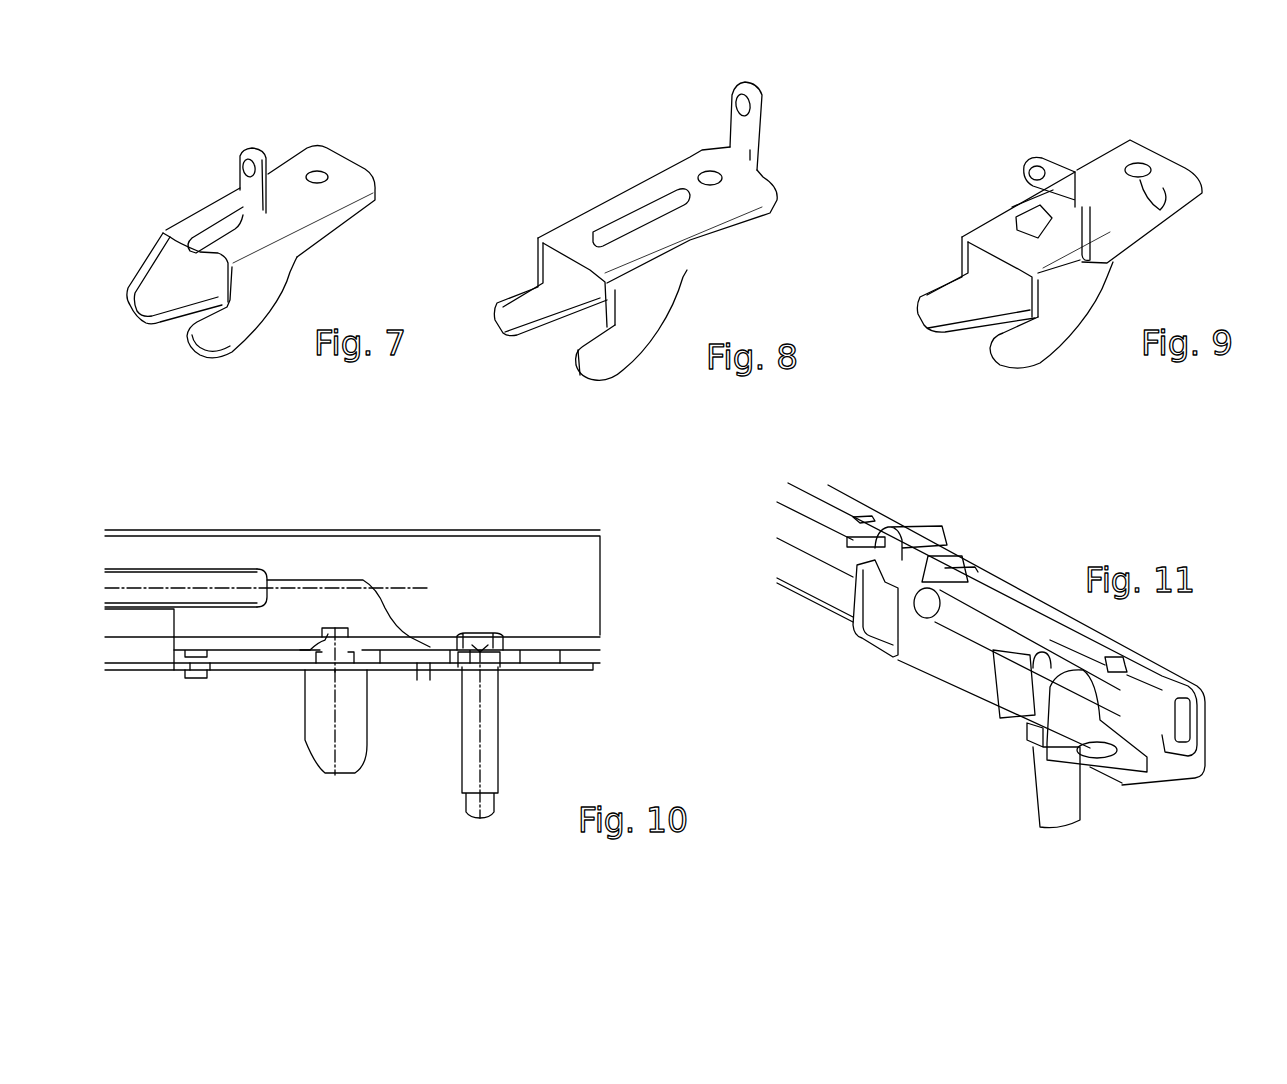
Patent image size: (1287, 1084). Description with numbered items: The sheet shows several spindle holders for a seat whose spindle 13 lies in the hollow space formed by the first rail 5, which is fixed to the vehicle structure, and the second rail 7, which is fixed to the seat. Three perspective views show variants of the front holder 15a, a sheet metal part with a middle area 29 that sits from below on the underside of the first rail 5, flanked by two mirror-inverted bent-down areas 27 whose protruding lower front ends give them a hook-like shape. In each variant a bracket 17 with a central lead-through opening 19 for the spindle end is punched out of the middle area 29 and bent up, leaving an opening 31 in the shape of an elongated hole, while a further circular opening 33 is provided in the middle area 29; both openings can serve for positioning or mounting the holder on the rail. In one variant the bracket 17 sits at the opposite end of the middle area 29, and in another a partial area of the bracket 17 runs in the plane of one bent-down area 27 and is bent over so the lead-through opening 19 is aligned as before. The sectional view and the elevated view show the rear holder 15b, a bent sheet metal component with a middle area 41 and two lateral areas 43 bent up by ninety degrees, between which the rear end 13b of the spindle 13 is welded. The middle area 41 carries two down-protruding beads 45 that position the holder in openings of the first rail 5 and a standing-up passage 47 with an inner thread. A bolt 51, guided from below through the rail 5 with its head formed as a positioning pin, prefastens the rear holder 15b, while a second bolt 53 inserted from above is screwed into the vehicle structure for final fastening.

In FIG. 10, the first rail 5 is at (582, 668).
In FIG. 11, the first rail 5 is at (1188, 780).
In FIG. 11, the second rail 7 is at (1128, 670).
In FIG. 10, the spindle 13 is at (137, 587).
In FIG. 11, the spindle 13 is at (980, 612).
In FIG. 10, the rear end of the spindle 13b is at (257, 577).
In FIG. 11, the rear end of the spindle 13b is at (1033, 653).
In FIG. 7, the front holder 15a is at (353, 180).
In FIG. 8, the front holder 15a is at (723, 235).
In FIG. 9, the front holder 15a is at (1123, 233).
In FIG. 10, the rear holder 15b is at (255, 625).
In FIG. 11, the rear holder 15b is at (1003, 690).
In FIG. 7, the bracket 17 is at (245, 190).
In FIG. 8, the bracket 17 is at (745, 148).
In FIG. 9, the bracket 17 is at (1068, 190).
In FIG. 7, the lead-through opening 19 is at (252, 167).
In FIG. 8, the lead-through opening 19 is at (745, 105).
In FIG. 9, the lead-through opening 19 is at (1037, 170).
In FIG. 7, the bent-down areas 27 is at (235, 332).
In FIG. 8, the bent-down areas 27 is at (631, 325).
In FIG. 9, the bent-down areas 27 is at (1037, 342).
In FIG. 7, the middle area 29 is at (310, 200).
In FIG. 8, the middle area 29 is at (570, 237).
In FIG. 9, the middle area 29 is at (995, 223).
In FIG. 7, the opening 31 is at (208, 242).
In FIG. 8, the opening 31 is at (637, 217).
In FIG. 9, the opening 31 is at (1027, 235).
In FIG. 7, the opening 33 is at (318, 178).
In FIG. 8, the opening 33 is at (710, 180).
In FIG. 9, the opening 33 is at (1137, 168).
In FIG. 10, the middle area 41 is at (385, 657).
In FIG. 11, the middle area 41 is at (1097, 721).
In FIG. 10, the lateral areas 43 is at (337, 602).
In FIG. 10, the beads 45 is at (197, 670).
In FIG. 10, the standing-up passage 47 is at (353, 647).
In FIG. 10, the bolt 51 is at (330, 723).
In FIG. 11, the bolt 51 is at (1053, 775).
In FIG. 10, the second bolt 53 is at (483, 745).